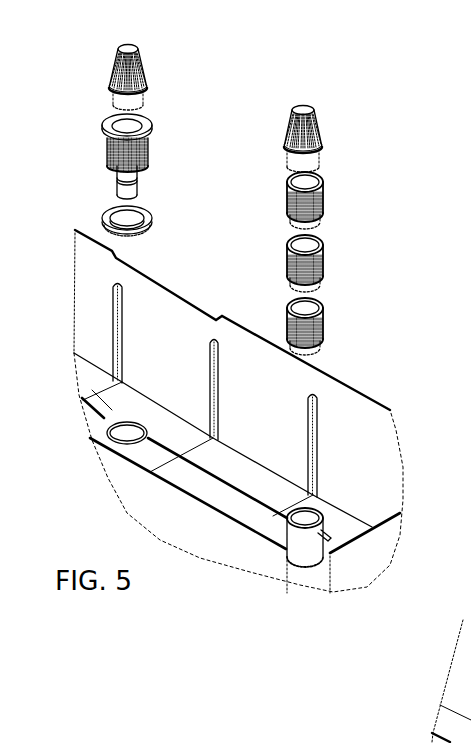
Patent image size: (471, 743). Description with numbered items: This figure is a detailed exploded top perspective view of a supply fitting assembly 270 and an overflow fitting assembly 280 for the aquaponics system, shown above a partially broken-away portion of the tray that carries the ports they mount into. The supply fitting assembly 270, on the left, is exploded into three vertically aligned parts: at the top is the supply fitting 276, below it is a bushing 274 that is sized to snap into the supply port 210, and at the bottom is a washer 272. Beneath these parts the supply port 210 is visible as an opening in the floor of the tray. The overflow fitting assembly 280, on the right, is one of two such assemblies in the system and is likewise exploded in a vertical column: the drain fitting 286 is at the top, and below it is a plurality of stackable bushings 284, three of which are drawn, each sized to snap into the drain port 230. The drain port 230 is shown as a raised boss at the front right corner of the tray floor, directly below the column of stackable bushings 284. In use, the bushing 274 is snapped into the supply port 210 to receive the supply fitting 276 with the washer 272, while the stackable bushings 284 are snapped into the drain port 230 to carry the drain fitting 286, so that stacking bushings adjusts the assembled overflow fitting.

The supply fitting assembly 270 is at (99, 122).
The supply fitting 276 is at (95, 78).
The bushing 274 is at (98, 156).
The washer 272 is at (98, 217).
The overflow fitting assembly 280 is at (339, 207).
The drain fitting 286 is at (340, 139).
The stackable bushings 284 is at (341, 263).
The supply port 210 is at (123, 438).
The drain port 230 is at (292, 528).